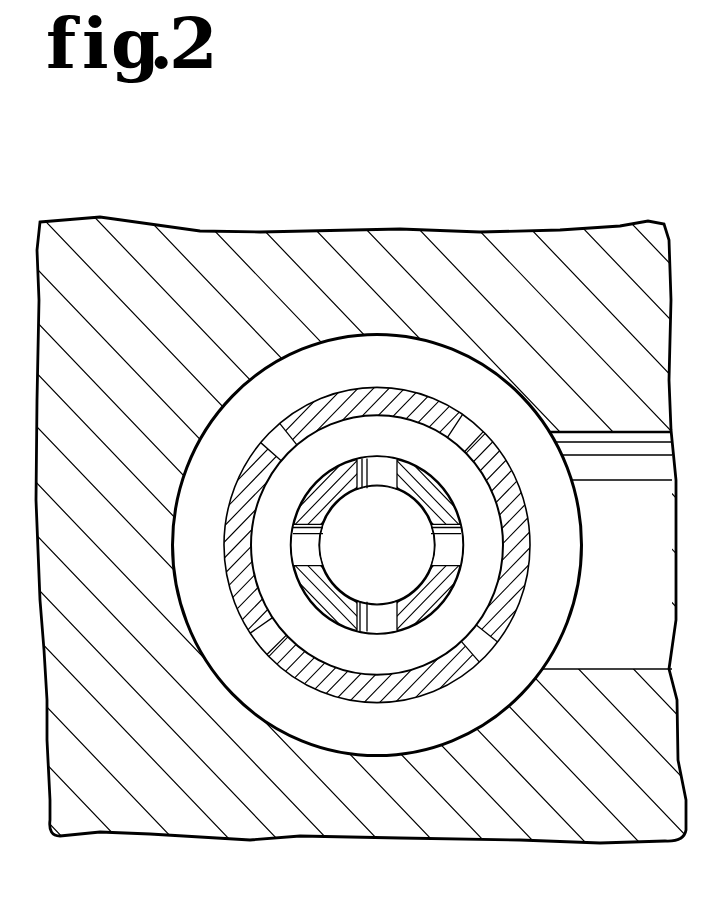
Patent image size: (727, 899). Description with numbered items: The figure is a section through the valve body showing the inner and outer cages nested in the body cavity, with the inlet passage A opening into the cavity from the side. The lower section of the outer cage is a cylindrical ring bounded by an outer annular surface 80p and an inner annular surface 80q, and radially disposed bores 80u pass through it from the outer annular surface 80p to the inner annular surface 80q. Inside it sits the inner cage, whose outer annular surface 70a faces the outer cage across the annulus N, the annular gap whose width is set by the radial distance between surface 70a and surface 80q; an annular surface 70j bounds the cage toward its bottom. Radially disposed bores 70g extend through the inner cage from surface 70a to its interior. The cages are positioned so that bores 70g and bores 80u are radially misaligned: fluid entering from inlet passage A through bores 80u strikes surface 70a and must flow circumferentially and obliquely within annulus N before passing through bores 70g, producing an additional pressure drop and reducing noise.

The outer annular surface 70a is at (531, 575).
The radially disposed bores 70g is at (359, 621).
The annular surface 70j is at (424, 582).
The outer annular surface 80p is at (377, 544).
The inner annular surface 80q is at (251, 542).
The radially disposed bores 80u is at (279, 441).
The annulus N is at (493, 551).
The inlet passage A is at (637, 567).